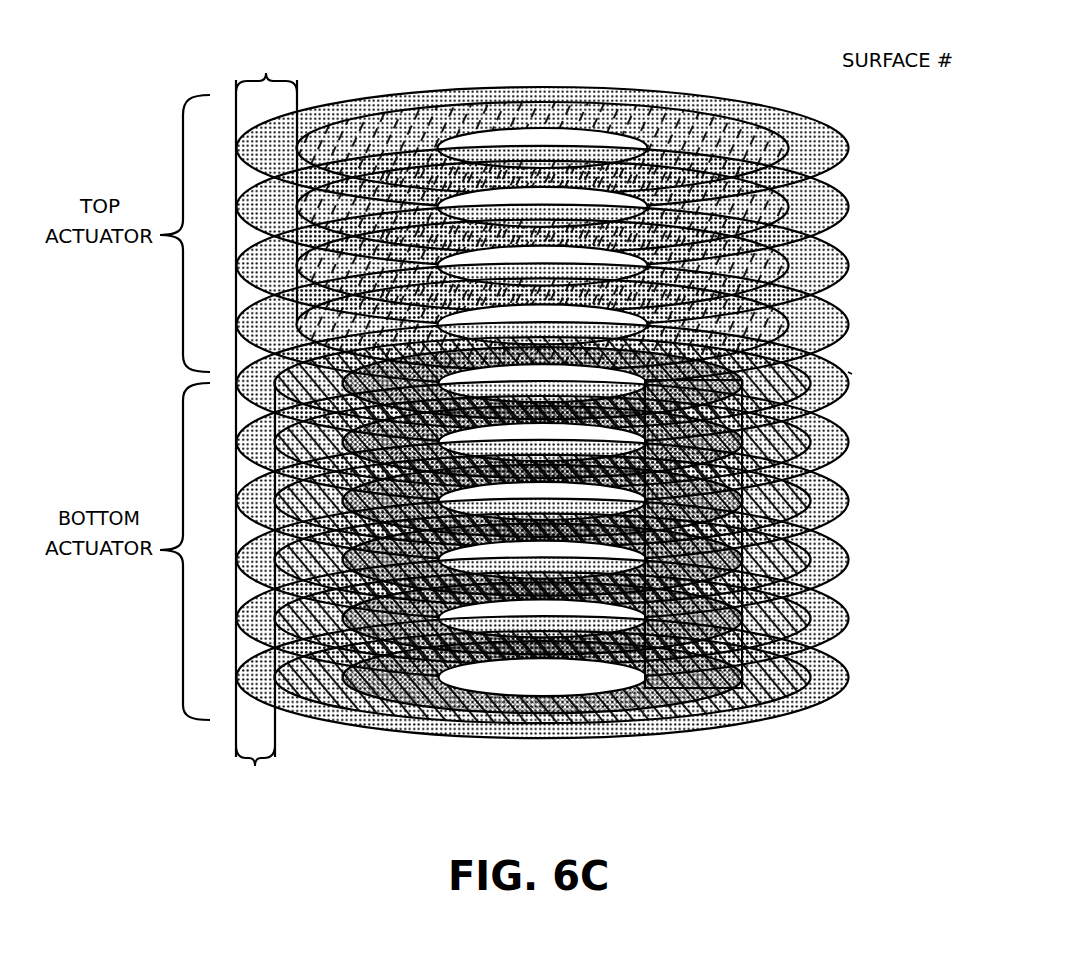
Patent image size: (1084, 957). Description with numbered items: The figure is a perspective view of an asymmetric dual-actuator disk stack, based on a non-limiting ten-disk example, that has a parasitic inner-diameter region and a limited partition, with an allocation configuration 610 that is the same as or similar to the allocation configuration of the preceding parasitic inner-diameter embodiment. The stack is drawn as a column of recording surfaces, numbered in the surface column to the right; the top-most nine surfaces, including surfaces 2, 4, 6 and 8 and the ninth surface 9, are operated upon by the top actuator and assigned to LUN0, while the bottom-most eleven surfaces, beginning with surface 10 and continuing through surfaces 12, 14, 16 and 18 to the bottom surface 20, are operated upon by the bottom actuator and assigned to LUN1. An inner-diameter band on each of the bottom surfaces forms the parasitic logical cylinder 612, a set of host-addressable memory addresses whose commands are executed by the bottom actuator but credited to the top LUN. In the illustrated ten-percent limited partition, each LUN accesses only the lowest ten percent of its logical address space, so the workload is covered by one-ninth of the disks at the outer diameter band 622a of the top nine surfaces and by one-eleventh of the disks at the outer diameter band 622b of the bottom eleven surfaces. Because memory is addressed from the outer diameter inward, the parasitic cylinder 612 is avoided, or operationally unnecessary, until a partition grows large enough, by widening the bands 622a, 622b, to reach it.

The disk surface 2 is at (831, 154).
The disk surface 4 is at (831, 213).
The disk surface 6 is at (831, 273).
The disk surface 8 is at (831, 332).
The disk surface 9 is at (847, 378).
The disk surface 10 is at (831, 392).
The disk surface 12 is at (831, 451).
The disk surface 14 is at (831, 510).
The disk surface 16 is at (831, 570).
The disk surface 18 is at (831, 629).
The disk surface 20 is at (831, 689).
The allocation configuration 610 is at (575, 457).
The parasitic logical cylinder 612 is at (692, 690).
The outer diameter band 622a is at (266, 402).
The outer diameter band 622b is at (262, 586).